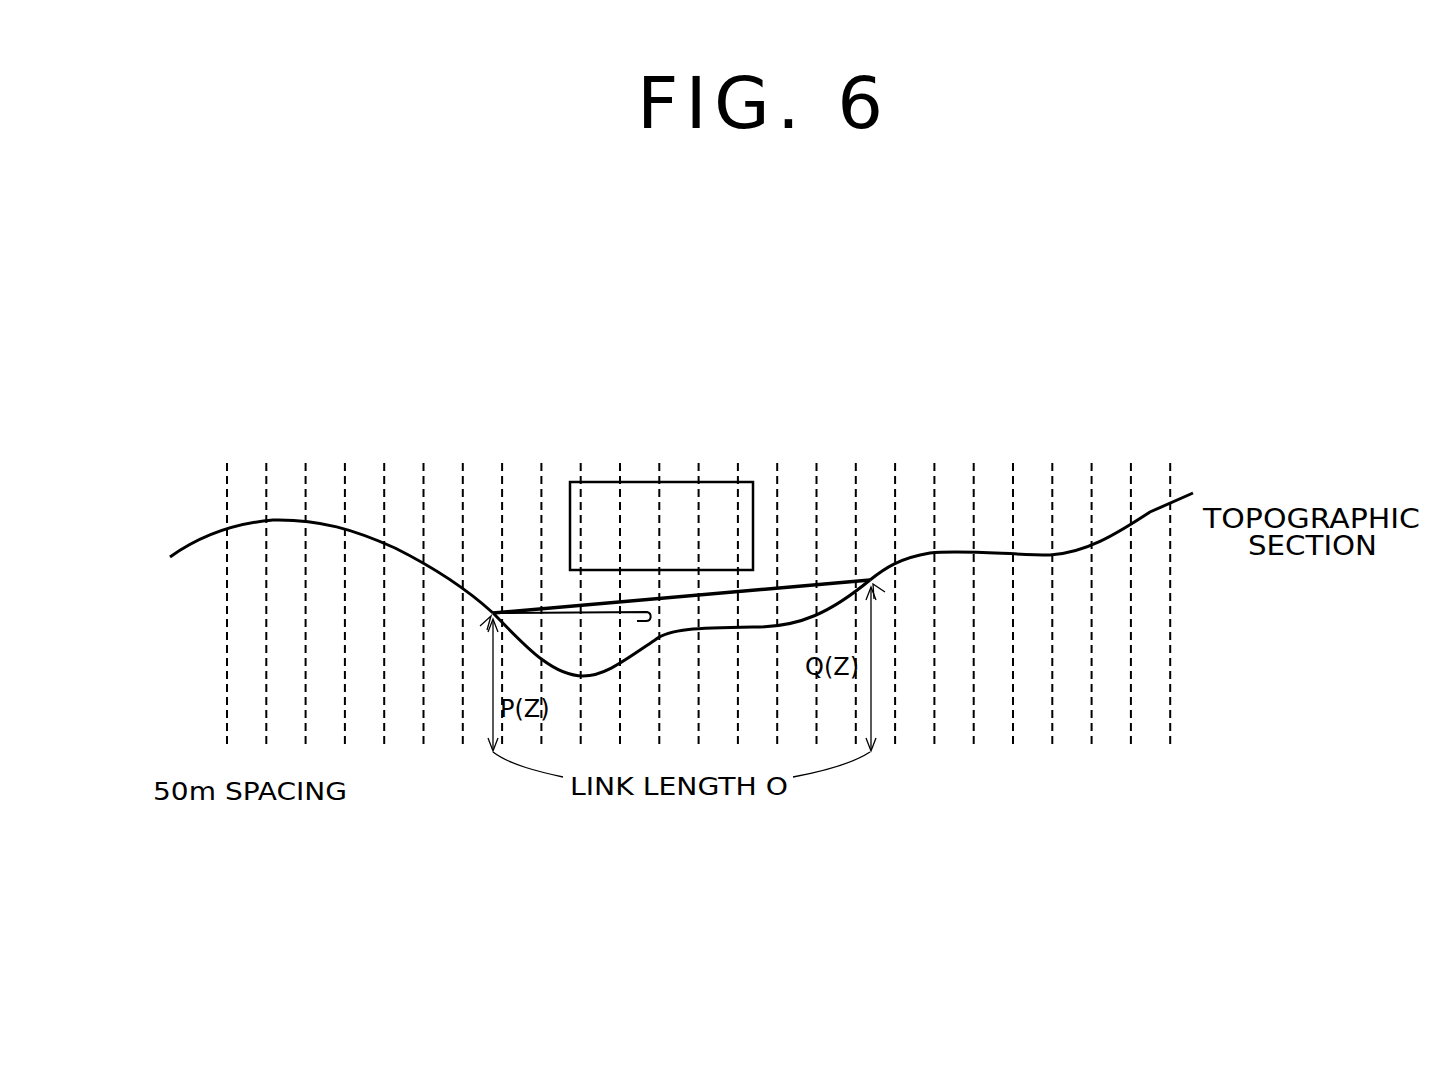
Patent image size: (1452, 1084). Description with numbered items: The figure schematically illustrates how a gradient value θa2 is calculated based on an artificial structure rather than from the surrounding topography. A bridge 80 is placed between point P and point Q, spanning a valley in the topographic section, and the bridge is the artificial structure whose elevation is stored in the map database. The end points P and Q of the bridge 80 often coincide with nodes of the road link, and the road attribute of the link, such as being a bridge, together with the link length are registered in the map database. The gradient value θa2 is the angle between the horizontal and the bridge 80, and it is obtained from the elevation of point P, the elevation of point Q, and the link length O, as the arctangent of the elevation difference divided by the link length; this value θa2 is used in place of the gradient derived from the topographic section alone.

The bridge 80 is at (838, 583).
The point P is at (490, 617).
The point Q is at (874, 585).
The gradient value θ a2 is at (637, 622).